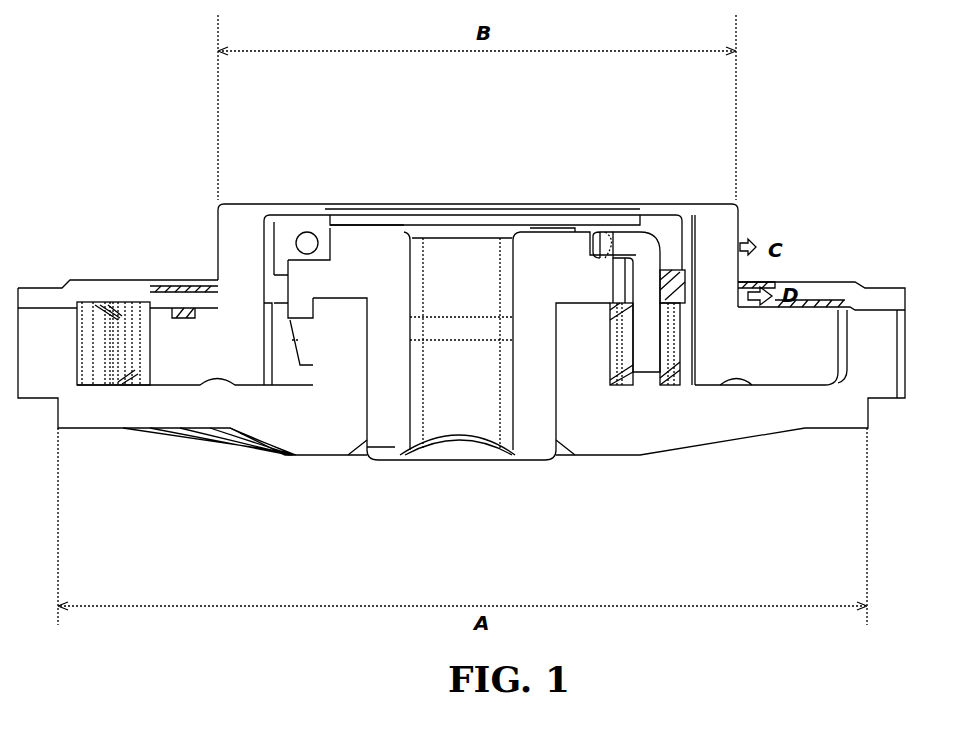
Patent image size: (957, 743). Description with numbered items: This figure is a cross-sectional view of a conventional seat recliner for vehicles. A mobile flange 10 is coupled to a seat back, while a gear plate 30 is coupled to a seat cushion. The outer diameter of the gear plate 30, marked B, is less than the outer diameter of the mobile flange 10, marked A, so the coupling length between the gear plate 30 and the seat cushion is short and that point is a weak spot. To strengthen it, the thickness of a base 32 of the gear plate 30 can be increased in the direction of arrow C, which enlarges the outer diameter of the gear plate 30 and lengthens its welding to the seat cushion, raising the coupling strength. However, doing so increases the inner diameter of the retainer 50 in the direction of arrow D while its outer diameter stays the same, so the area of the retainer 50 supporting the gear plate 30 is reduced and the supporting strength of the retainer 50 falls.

The mobile flange 10 is at (311, 426).
The gear plate 30 is at (202, 342).
The base 32 is at (717, 218).
The retainer 50 is at (813, 297).